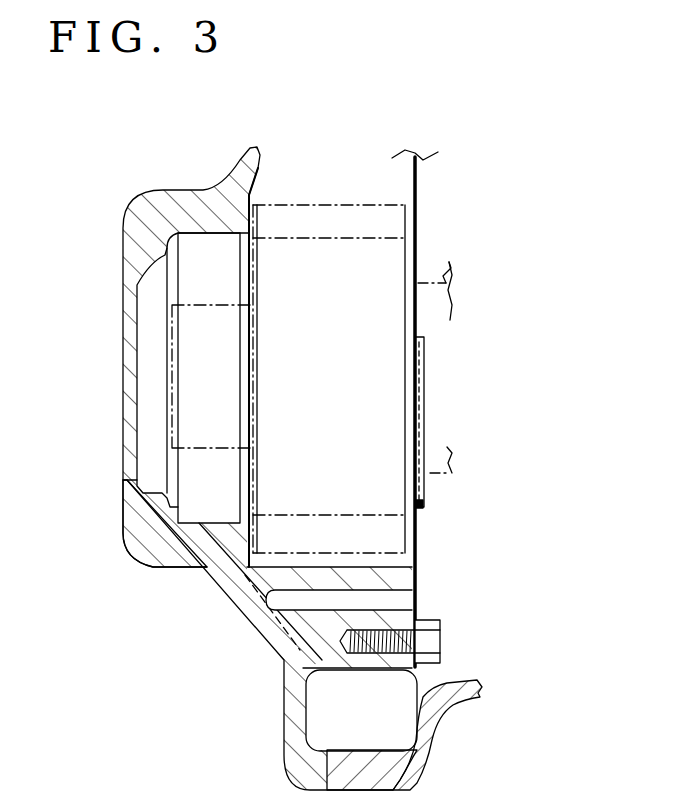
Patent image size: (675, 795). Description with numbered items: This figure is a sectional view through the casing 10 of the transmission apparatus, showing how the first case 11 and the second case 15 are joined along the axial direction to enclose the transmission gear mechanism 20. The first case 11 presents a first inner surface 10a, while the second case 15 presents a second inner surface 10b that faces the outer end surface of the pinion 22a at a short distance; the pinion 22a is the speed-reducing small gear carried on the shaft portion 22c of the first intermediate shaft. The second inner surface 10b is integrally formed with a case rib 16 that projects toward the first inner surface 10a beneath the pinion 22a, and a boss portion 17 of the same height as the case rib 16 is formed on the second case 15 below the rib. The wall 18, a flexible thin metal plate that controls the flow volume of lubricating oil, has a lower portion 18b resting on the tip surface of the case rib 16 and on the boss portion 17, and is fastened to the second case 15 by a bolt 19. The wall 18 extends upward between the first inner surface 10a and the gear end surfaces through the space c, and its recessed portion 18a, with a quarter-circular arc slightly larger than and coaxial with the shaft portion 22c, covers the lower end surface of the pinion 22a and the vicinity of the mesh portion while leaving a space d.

The casing 10 is at (250, 686).
The first inner surface 10a is at (417, 172).
The second inner surface 10b is at (249, 217).
The first case 11 is at (430, 720).
The second case 15 is at (190, 558).
The case rib 16 is at (327, 577).
The boss portion 17 is at (355, 663).
The wall 18 is at (417, 530).
The recessed portion 18a is at (423, 498).
The lower portion 18b is at (417, 600).
The bolt 19 is at (435, 643).
The transmission gear mechanism 20 is at (462, 303).
The pinion 22a is at (312, 203).
The shaft portion 22c is at (452, 264).
The space c is at (410, 247).
The space d is at (408, 357).